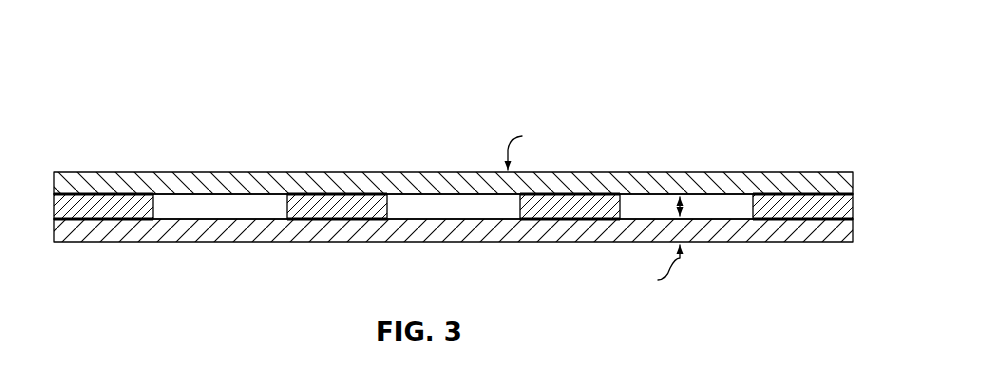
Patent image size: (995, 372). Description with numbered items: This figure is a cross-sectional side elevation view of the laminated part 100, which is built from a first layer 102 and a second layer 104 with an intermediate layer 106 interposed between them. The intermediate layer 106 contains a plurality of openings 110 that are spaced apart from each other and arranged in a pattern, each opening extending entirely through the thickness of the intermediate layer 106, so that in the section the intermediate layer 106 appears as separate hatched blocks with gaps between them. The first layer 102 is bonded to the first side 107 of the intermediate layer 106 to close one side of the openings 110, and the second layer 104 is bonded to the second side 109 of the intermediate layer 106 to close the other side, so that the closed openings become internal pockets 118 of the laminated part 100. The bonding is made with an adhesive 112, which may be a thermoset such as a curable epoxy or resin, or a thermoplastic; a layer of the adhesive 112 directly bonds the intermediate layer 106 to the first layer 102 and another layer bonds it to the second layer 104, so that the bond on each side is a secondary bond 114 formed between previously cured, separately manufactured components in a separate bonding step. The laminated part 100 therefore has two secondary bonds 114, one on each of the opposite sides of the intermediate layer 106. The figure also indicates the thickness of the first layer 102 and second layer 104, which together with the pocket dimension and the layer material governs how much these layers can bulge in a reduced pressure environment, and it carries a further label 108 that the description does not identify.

The laminated part 100 is at (799, 47).
The first layer 102 is at (848, 178).
The second layer 104 is at (841, 223).
The intermediate layer 106 is at (128, 193).
The first side 107 is at (143, 193).
The second adhesive layer 108 is at (180, 223).
The second side 109 is at (110, 221).
The openings 110 is at (157, 212).
The adhesive 112 is at (109, 186).
The secondary bond 114 is at (112, 193).
The internal pockets 118 is at (240, 205).